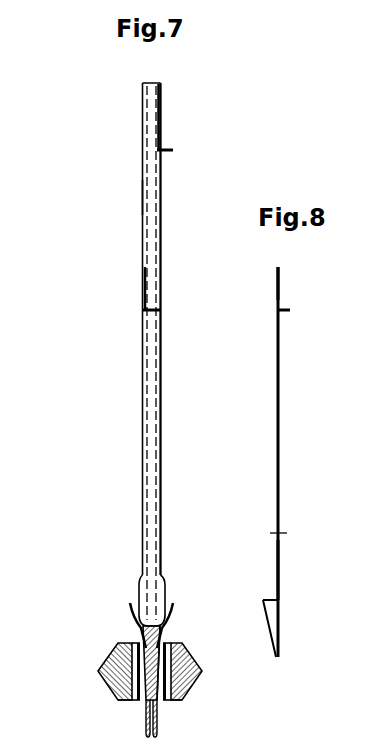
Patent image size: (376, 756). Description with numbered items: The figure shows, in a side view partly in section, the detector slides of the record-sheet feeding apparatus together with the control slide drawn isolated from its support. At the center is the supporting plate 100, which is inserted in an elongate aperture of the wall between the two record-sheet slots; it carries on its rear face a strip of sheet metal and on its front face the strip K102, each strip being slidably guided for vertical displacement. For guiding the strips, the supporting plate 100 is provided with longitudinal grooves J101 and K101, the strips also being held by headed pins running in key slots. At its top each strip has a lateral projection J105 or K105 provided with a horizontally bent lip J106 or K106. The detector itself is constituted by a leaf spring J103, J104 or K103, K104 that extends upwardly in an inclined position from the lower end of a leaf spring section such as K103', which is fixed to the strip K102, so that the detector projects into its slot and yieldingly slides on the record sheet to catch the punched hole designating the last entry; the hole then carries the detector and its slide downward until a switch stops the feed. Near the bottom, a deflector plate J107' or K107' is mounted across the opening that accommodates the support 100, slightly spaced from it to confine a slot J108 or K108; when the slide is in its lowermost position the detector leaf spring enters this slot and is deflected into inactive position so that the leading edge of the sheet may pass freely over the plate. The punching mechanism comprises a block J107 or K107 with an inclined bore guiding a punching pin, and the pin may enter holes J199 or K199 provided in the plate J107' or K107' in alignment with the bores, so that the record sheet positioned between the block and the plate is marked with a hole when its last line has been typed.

In FIG. 7, the supporting plate 100 is at (151, 401).
In FIG. 7, the longitudinal groove K101 is at (142, 196).
In FIG. 7, the longitudinal groove J101 is at (161, 227).
In FIG. 7, the lateral projection J105 is at (161, 107).
In FIG. 7, the horizontally bent lip J106 is at (174, 150).
In FIG. 7, the lateral projection K105 is at (145, 266).
In FIG. 8, the lateral projection K105 is at (279, 267).
In FIG. 7, the horizontally bent lip K106 is at (161, 310).
In FIG. 8, the horizontally bent lip K106 is at (290, 310).
In FIG. 7, the detector leaf spring K104 is at (130, 603).
In FIG. 8, the detector leaf spring K104 is at (280, 600).
In FIG. 7, the detector leaf spring J104 is at (174, 601).
In FIG. 7, the detector leaf spring K103 is at (91, 660).
In FIG. 8, the detector leaf spring K103 is at (311, 628).
In FIG. 7, the detector leaf spring J103 is at (161, 628).
In FIG. 7, the hole K199 is at (118, 650).
In FIG. 7, the hole J199 is at (183, 650).
In FIG. 7, the slot K108 is at (98, 672).
In FIG. 7, the slot J108 is at (203, 672).
In FIG. 7, the block K107 is at (81, 695).
In FIG. 7, the block J107 is at (208, 695).
In FIG. 7, the deflector plate K107' is at (119, 719).
In FIG. 7, the deflector plate J107' is at (189, 718).
In FIG. 8, the strip K102 is at (280, 453).
In FIG. 8, the leaf spring section K103' is at (315, 570).